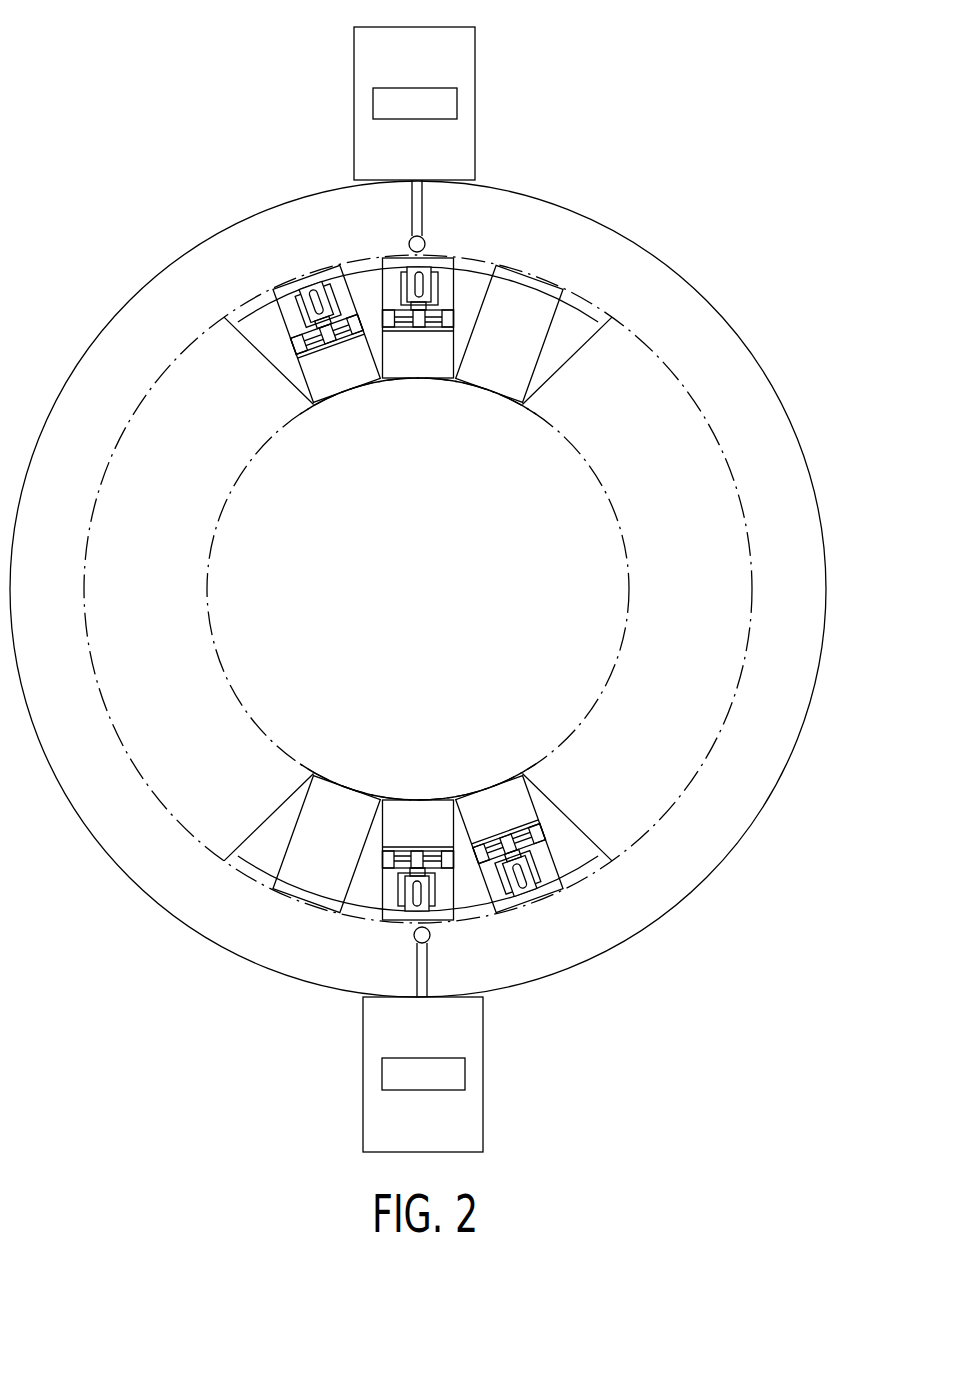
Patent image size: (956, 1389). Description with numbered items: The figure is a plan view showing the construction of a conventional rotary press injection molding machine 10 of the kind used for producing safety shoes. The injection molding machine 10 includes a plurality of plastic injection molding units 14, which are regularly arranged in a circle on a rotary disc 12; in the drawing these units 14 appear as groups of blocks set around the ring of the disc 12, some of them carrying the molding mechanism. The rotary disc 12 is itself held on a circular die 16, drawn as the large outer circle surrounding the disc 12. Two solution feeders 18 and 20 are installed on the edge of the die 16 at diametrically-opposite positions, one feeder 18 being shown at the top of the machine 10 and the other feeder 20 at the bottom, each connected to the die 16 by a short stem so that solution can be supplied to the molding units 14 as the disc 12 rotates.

The rotary press injection molding machine 10 is at (609, 28).
The rotary disc 12 is at (565, 333).
The plastic injection molding unit 14 is at (393, 896).
The circular die 16 is at (125, 830).
The solution feeder 18 is at (452, 68).
The solution feeder 20 is at (453, 1117).